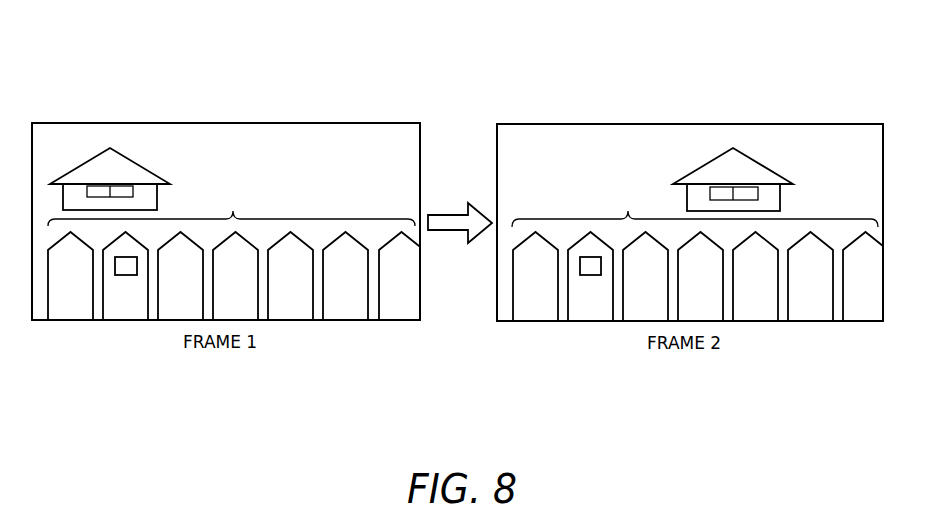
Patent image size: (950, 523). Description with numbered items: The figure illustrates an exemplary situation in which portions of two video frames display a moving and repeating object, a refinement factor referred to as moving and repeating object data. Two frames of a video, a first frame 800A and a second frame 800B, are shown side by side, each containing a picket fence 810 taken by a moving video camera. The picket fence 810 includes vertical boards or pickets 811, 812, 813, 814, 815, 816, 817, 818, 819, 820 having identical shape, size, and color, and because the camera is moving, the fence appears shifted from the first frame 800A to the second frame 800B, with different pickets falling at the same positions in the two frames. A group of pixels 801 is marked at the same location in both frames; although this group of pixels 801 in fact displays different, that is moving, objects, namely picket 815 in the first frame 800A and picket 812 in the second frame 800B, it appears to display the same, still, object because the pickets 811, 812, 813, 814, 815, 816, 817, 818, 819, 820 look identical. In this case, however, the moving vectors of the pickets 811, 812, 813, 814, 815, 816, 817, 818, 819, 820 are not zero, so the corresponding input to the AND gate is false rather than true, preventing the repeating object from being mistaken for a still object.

The first video frame 800A is at (343, 108).
The second video frame 800B is at (717, 108).
The group of pixels 801 is at (127, 275).
The picket fence 810 is at (463, 208).
The picket 811 is at (533, 319).
The picket 812 is at (598, 319).
The picket 813 is at (632, 319).
The picket 814 is at (65, 318).
The picket 815 is at (133, 318).
The picket 816 is at (167, 318).
The picket 817 is at (245, 313).
The picket 818 is at (288, 318).
The picket 819 is at (340, 318).
The picket 820 is at (137, 165).